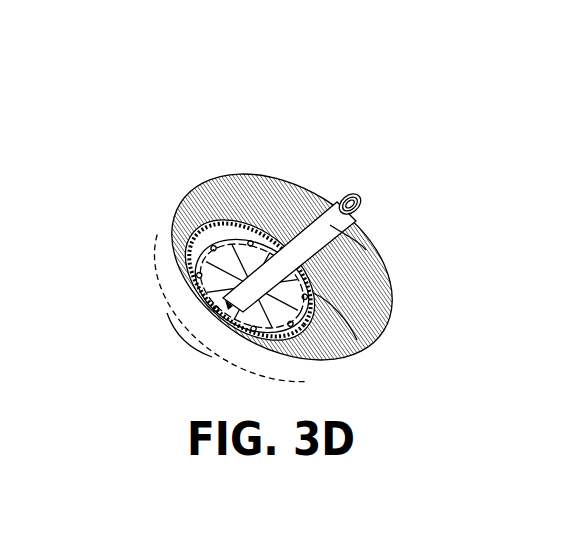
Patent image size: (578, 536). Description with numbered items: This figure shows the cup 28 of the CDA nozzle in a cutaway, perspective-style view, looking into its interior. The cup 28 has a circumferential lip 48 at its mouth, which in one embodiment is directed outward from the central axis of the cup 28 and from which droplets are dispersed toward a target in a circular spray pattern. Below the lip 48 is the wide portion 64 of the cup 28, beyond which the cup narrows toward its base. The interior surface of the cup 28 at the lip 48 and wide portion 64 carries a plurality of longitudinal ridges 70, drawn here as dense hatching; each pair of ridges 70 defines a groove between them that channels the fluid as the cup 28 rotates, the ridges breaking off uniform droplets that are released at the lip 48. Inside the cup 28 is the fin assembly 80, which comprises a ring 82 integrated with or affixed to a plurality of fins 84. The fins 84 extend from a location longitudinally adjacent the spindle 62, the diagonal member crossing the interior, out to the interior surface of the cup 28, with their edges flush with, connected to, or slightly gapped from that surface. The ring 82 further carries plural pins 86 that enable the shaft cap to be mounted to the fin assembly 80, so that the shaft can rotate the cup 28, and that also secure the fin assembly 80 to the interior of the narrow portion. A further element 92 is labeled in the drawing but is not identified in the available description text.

The cup 28 is at (127, 137).
The circumferential lip 48 is at (177, 233).
The spindle 62 is at (337, 202).
The wide portion 64 is at (197, 320).
The longitudinal ridges 70 is at (371, 343).
The fin assembly 80 is at (233, 287).
The ring 82 is at (288, 242).
The fins 84 is at (370, 322).
The pins 86 is at (366, 250).
The connector 92 is at (232, 309).